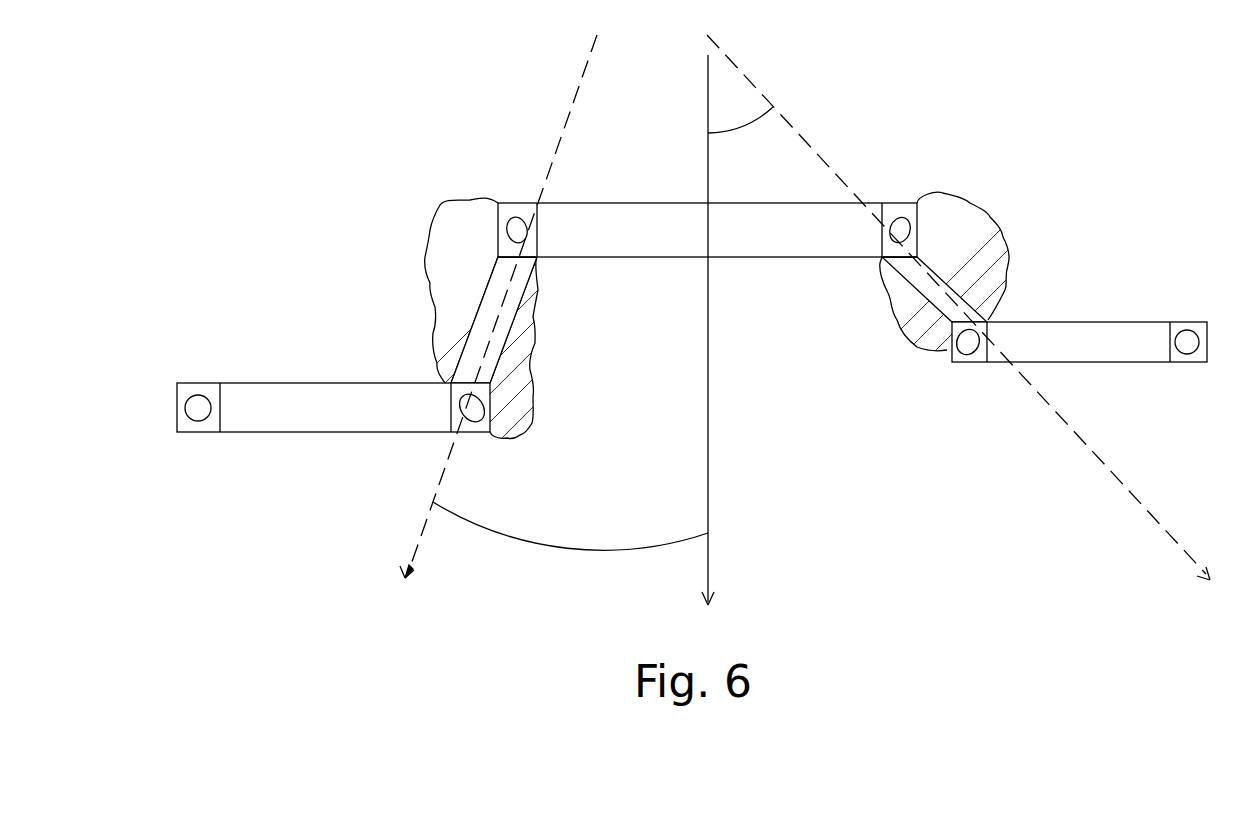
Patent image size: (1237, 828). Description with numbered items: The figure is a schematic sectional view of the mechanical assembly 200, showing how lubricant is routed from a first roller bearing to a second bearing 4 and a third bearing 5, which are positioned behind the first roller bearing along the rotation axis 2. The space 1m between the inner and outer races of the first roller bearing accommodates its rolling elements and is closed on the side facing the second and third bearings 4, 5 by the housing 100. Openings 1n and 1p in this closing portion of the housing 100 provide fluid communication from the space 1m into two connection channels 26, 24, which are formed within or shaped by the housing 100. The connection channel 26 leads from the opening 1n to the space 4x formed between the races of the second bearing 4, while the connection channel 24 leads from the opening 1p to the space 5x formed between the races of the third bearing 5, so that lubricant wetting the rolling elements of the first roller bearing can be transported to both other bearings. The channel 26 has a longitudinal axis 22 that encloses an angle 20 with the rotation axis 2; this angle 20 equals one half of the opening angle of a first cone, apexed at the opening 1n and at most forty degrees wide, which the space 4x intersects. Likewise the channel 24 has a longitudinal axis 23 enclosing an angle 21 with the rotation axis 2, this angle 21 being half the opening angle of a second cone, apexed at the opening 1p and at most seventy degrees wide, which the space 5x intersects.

The mechanical assembly 200 is at (438, 160).
The housing 100 is at (435, 240).
The space of the first roller bearing 1m is at (518, 203).
The opening 1n is at (537, 258).
The connection channel 26 is at (535, 290).
The opening 1p is at (882, 258).
The connection channel 24 is at (912, 297).
The second bearing 4 is at (197, 384).
The space of the second bearing 4x is at (477, 433).
The third bearing 5 is at (1187, 322).
The space of the third bearing 5x is at (980, 362).
The rotation axis 2 is at (708, 464).
The angle 20 is at (568, 551).
The angle 21 is at (760, 127).
The longitudinal axis 22 is at (421, 536).
The longitudinal axis 23 is at (1154, 520).